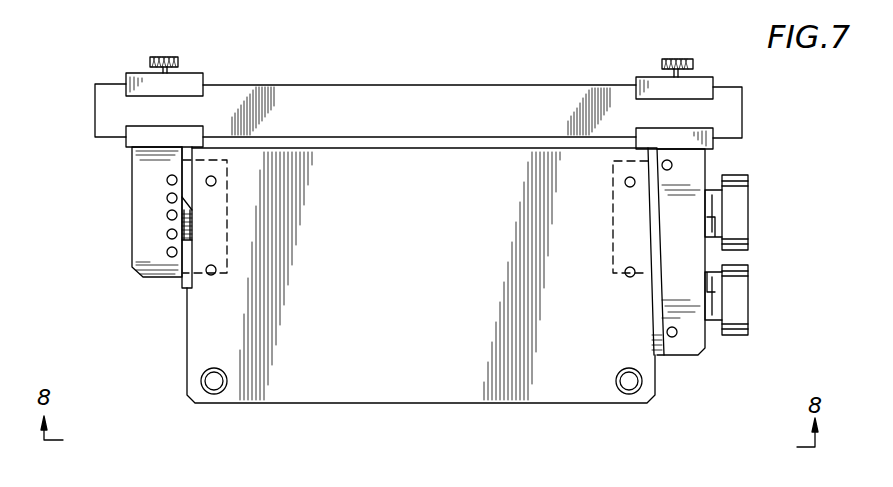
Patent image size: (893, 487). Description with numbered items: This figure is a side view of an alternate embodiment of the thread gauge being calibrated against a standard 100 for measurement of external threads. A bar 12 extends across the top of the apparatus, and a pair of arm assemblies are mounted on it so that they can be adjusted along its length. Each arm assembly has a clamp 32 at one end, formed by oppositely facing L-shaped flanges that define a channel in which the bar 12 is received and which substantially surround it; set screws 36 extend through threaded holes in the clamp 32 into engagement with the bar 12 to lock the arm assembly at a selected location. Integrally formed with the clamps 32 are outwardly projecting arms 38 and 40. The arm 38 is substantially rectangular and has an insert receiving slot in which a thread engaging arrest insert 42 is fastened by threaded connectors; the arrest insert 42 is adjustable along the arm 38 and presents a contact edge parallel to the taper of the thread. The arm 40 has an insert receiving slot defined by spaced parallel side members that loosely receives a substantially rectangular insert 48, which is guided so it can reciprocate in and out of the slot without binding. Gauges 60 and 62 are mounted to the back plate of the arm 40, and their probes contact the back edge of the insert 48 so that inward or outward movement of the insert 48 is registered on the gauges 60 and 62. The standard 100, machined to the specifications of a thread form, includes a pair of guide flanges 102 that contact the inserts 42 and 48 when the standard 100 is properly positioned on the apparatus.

The bar 12 is at (360, 95).
The clamp 32 is at (193, 79).
The set screws 36 is at (165, 57).
The arm 38 is at (142, 167).
The arm 40 is at (692, 173).
The thread engaging arrest insert 42 is at (182, 226).
The insert 48 is at (657, 355).
The gauge 60 is at (745, 290).
The gauge 62 is at (743, 210).
The standard 100 is at (362, 390).
The guide flanges 102 is at (183, 288).